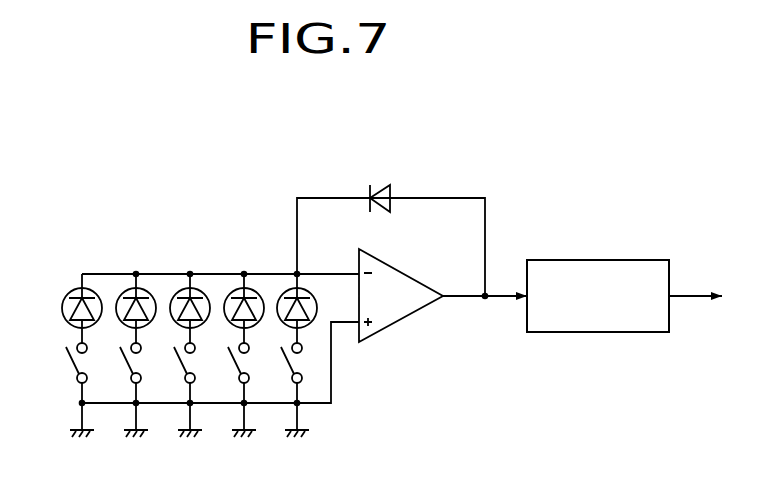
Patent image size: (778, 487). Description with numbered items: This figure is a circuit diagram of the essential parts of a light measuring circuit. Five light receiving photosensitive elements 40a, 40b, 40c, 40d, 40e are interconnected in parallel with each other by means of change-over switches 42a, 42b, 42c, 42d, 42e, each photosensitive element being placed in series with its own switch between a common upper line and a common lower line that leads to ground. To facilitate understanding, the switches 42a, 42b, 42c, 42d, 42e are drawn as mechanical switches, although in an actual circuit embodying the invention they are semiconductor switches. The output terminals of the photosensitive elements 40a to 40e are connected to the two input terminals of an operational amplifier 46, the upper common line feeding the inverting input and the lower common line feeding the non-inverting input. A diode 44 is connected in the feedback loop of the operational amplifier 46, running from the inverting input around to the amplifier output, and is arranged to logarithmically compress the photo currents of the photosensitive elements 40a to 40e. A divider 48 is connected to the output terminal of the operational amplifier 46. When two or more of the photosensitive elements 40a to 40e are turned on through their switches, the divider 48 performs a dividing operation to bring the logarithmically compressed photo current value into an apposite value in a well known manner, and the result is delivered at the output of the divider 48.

The light receiving photosensitive element 40a is at (285, 288).
The light receiving photosensitive element 40b is at (232, 288).
The light receiving photosensitive element 40c is at (178, 288).
The light receiving photosensitive element 40d is at (124, 288).
The light receiving photosensitive element 40e is at (70, 288).
The change-over switch 42a is at (290, 358).
The change-over switch 42b is at (237, 358).
The change-over switch 42c is at (183, 358).
The change-over switch 42d is at (129, 358).
The change-over switch 42e is at (75, 358).
The diode 44 is at (392, 190).
The operational amplifier 46 is at (397, 325).
The divider 48 is at (628, 260).